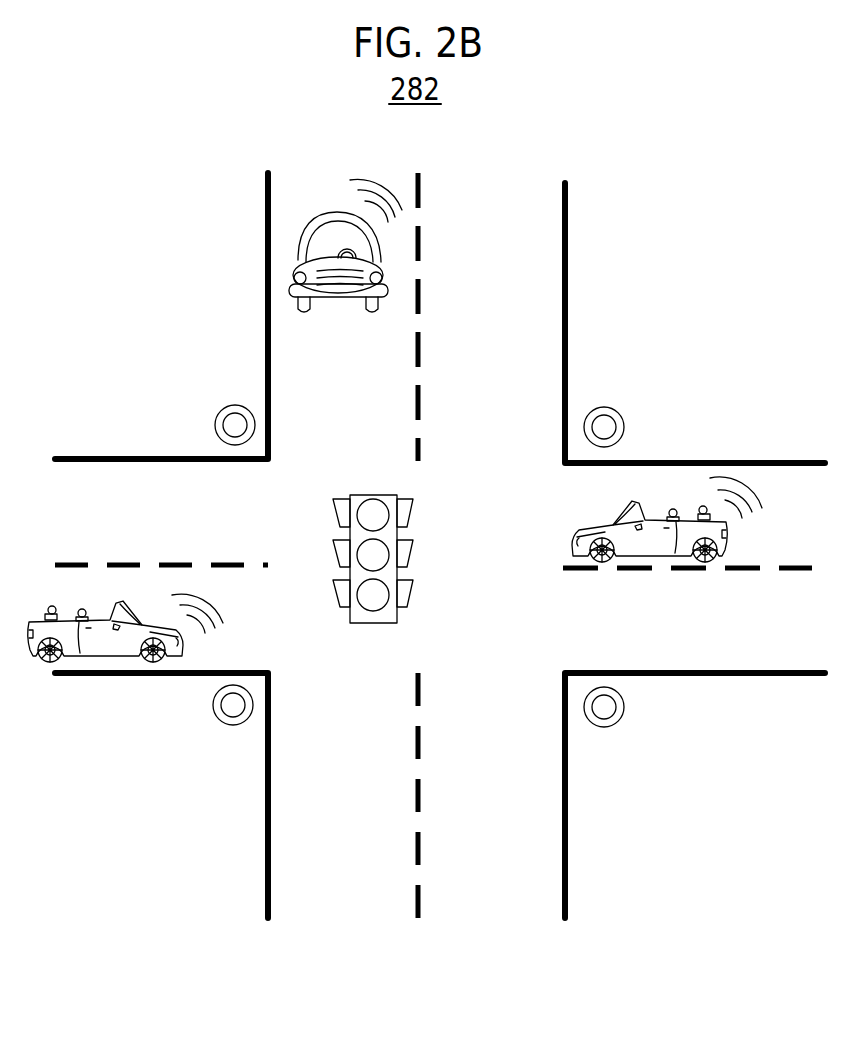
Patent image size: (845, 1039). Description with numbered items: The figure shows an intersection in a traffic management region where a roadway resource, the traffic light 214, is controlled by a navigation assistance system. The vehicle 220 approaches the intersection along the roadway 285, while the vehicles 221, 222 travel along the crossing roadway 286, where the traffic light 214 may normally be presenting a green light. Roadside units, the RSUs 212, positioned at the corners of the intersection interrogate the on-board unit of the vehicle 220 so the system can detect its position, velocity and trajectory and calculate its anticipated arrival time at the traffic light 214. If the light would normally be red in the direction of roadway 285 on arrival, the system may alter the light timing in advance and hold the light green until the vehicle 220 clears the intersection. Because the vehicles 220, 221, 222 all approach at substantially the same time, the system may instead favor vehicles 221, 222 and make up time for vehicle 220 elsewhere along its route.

The RSU 212 is at (214, 427).
The traffic light 214 is at (370, 624).
The vehicle 220 is at (338, 300).
The vehicle 221 is at (93, 622).
The vehicle 222 is at (613, 506).
The roadway 285 is at (565, 218).
The roadway 286 is at (708, 675).